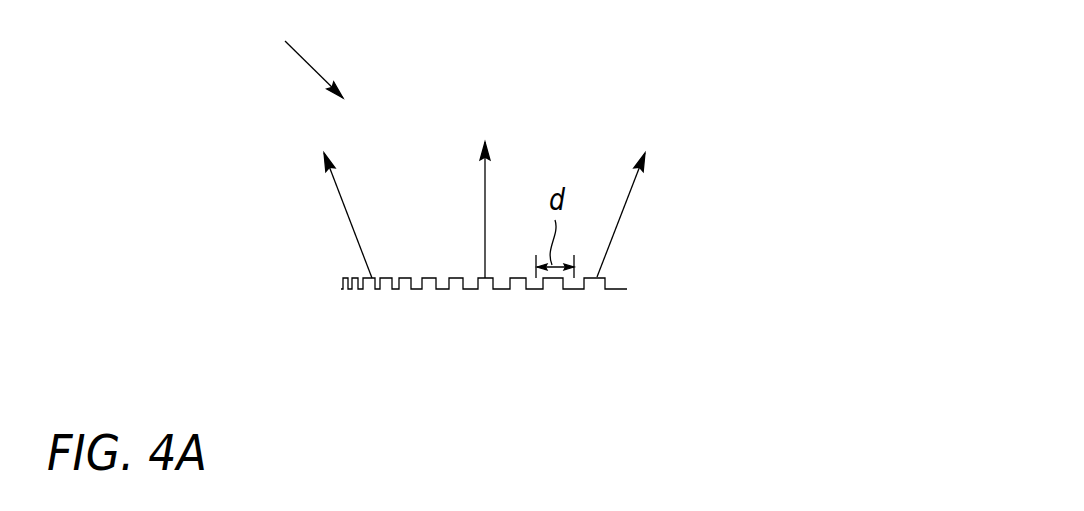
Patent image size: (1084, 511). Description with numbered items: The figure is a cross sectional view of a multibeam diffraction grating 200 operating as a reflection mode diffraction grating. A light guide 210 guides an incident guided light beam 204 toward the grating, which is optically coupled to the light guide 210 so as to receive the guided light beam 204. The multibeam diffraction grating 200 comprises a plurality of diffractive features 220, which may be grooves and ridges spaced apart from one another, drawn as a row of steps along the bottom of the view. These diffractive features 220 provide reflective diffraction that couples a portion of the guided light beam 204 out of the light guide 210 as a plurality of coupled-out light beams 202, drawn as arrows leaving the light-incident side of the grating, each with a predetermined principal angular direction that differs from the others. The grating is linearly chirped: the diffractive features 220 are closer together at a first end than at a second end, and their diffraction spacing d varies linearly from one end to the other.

The multibeam diffraction grating 200 is at (748, 85).
The coupled-out light beams 202 is at (663, 197).
The guided light beam 204 is at (315, 65).
The light guide 210 is at (262, 125).
The diffractive features 220 is at (430, 278).